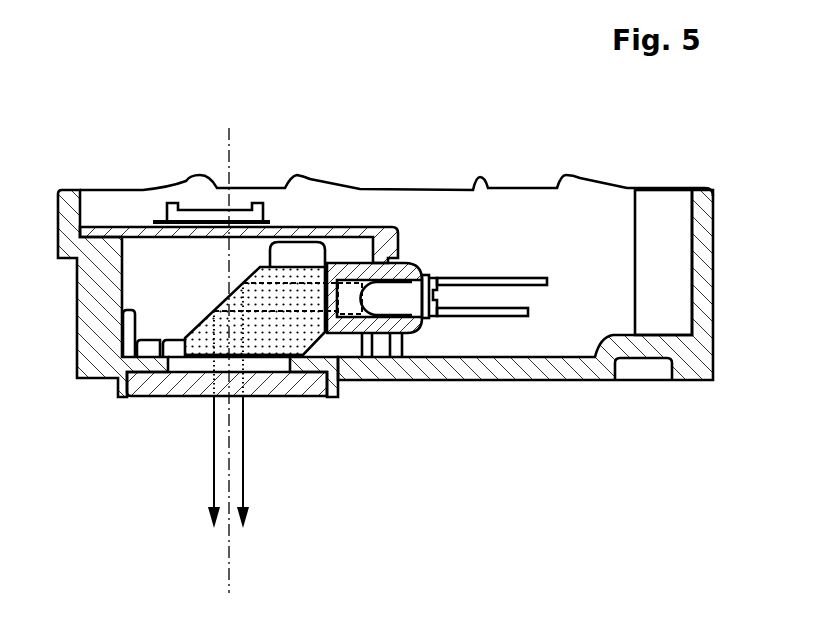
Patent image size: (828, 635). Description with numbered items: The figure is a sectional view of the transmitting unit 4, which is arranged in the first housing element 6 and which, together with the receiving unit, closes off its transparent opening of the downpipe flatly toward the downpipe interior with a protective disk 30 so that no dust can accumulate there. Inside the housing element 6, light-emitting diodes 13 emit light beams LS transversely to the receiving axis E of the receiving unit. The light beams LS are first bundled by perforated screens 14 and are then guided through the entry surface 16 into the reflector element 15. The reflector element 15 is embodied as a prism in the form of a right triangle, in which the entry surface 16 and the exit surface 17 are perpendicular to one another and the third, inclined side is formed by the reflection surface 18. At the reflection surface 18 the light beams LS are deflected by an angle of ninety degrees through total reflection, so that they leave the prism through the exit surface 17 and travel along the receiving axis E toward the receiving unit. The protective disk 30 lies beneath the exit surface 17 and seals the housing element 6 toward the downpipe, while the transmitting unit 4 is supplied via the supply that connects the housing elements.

The transmitting unit 4 is at (84, 133).
The first housing element 6 is at (593, 370).
The light-emitting diodes 13 is at (412, 303).
The perforated screens 14 is at (347, 322).
The reflector element 15 is at (292, 273).
The entry surface 16 is at (332, 285).
The exit surface 17 is at (252, 357).
The reflection surface 18 is at (222, 302).
The protective disk 30 is at (157, 385).
The light beams LS is at (212, 405).
The receiving axis E is at (231, 568).